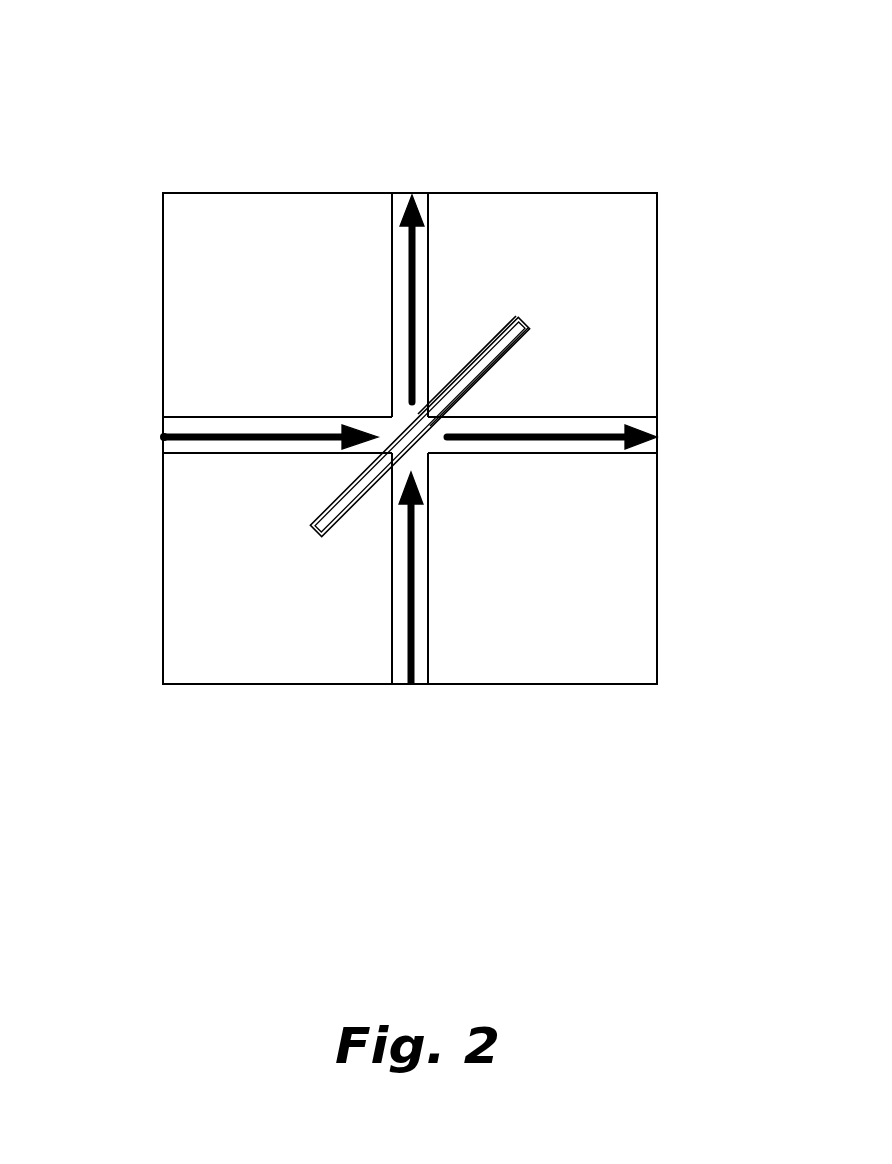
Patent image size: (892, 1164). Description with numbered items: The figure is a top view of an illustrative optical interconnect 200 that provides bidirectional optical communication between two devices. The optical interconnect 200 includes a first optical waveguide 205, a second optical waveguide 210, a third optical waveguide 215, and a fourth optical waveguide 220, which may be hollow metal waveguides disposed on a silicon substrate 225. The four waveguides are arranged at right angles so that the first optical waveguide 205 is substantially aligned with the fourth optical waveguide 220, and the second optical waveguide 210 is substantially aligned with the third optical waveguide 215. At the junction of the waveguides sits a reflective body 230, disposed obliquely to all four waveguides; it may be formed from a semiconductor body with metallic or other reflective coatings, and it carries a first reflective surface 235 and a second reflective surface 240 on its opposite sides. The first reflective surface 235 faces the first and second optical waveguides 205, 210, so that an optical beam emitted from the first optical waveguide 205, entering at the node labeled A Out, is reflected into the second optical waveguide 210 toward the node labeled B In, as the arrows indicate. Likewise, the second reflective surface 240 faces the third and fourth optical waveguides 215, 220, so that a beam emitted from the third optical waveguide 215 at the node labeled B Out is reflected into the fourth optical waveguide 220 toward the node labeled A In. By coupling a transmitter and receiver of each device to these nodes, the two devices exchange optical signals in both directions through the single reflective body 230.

The optical interconnect 200 is at (87, 101).
The first optical waveguide 205 is at (244, 416).
The second optical waveguide 210 is at (392, 282).
The third optical waveguide 215 is at (392, 612).
The fourth optical waveguide 220 is at (606, 416).
The silicon substrate 225 is at (616, 192).
The reflective body 230 is at (523, 318).
The first reflective surface 235 is at (498, 337).
The second reflective surface 240 is at (513, 355).